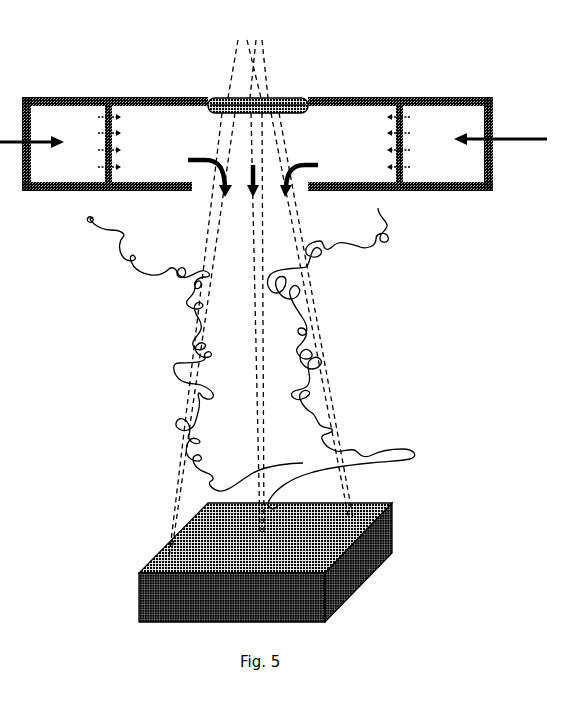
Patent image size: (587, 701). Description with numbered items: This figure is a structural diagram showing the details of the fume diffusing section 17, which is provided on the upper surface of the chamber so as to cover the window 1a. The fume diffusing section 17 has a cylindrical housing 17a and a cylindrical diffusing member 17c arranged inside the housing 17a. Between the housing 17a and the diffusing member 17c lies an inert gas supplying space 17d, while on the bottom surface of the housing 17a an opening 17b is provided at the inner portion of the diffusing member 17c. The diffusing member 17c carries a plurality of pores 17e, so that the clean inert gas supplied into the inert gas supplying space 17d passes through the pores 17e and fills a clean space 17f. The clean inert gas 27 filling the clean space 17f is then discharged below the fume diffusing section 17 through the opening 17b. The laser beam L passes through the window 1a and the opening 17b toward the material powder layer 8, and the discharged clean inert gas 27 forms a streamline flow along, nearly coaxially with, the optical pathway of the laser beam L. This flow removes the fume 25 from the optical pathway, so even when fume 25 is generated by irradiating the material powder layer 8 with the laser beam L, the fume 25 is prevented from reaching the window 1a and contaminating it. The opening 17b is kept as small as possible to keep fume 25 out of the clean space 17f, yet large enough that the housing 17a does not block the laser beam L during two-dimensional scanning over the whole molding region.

The window 1a is at (284, 100).
The material powder layer 8 is at (393, 534).
The fume diffusing section 17 is at (279, 161).
The housing 17a is at (493, 175).
The opening 17b is at (297, 200).
The diffusing member 17c is at (110, 105).
The inert gas supplying space 17d is at (70, 169).
The pores 17e is at (408, 113).
The clean space 17f is at (347, 154).
The fume 25 is at (387, 225).
The clean inert gas 27 is at (524, 138).
The laser beam L is at (210, 237).